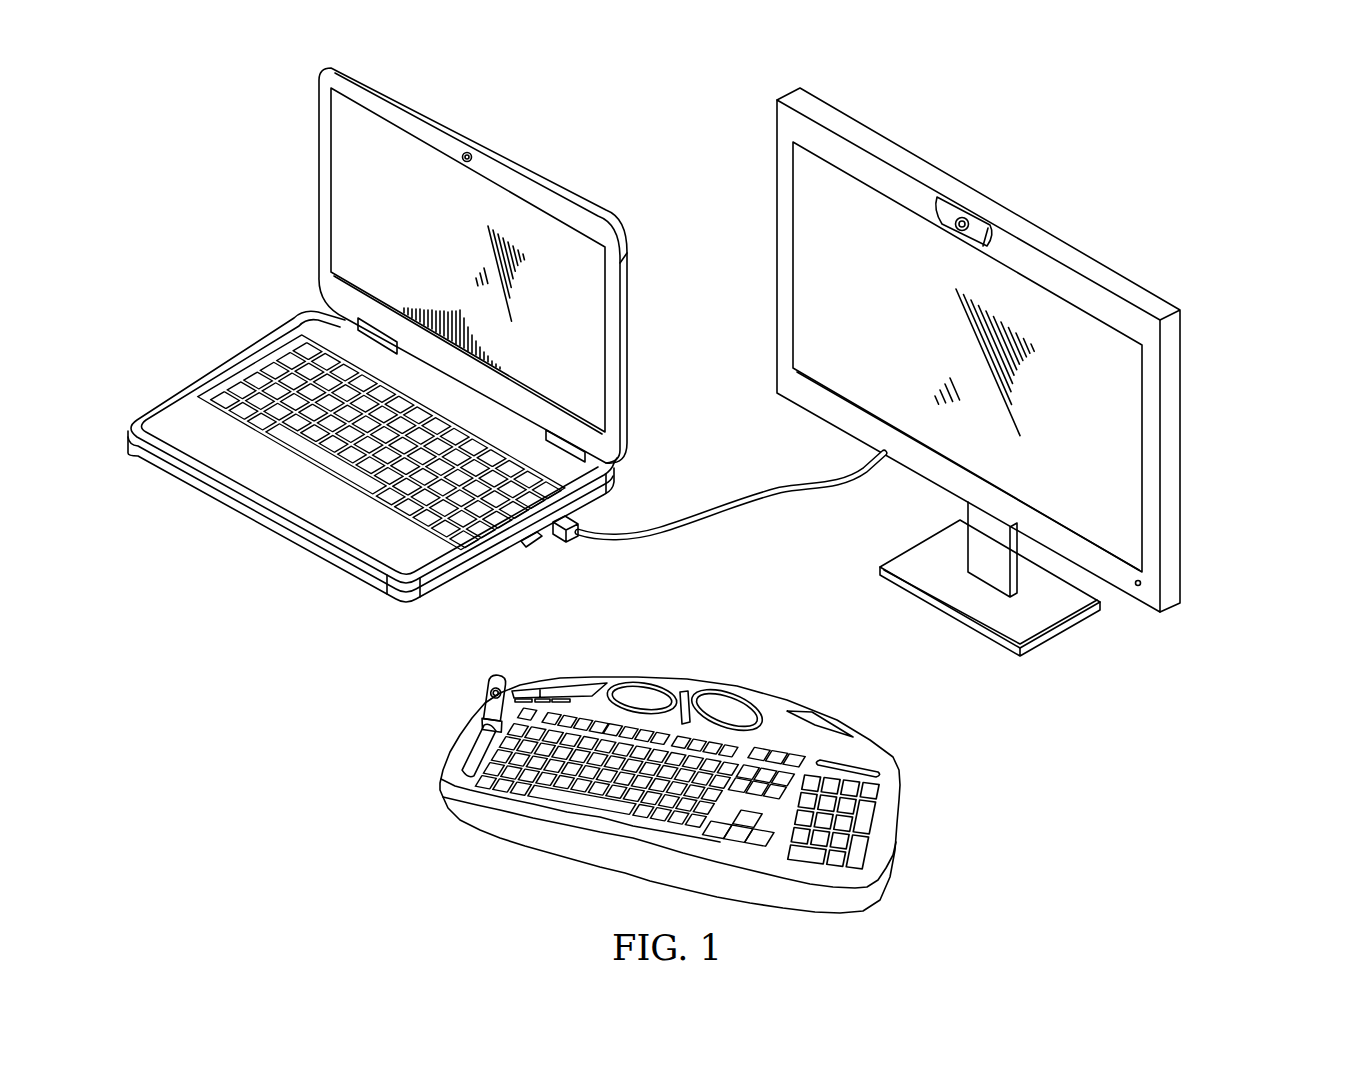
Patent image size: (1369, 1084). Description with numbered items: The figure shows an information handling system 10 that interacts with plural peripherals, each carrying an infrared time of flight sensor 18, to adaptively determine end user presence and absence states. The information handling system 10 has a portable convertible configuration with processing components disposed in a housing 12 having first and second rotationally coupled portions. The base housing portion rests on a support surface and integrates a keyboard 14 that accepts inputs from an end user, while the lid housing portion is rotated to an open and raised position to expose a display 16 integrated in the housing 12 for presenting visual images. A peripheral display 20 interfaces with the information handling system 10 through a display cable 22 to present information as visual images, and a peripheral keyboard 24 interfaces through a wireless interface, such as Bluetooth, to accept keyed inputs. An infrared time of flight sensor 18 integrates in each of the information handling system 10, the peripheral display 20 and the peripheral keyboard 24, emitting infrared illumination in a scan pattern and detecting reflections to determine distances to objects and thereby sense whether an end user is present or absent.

The information handling system 10 is at (354, 329).
The housing 12 is at (258, 542).
The keyboard 14 is at (252, 366).
The display 16 is at (473, 265).
The infrared time of flight sensor 18 is at (462, 161).
The peripheral display 20 is at (1183, 455).
The display cable 22 is at (730, 505).
The peripheral keyboard 24 is at (906, 833).